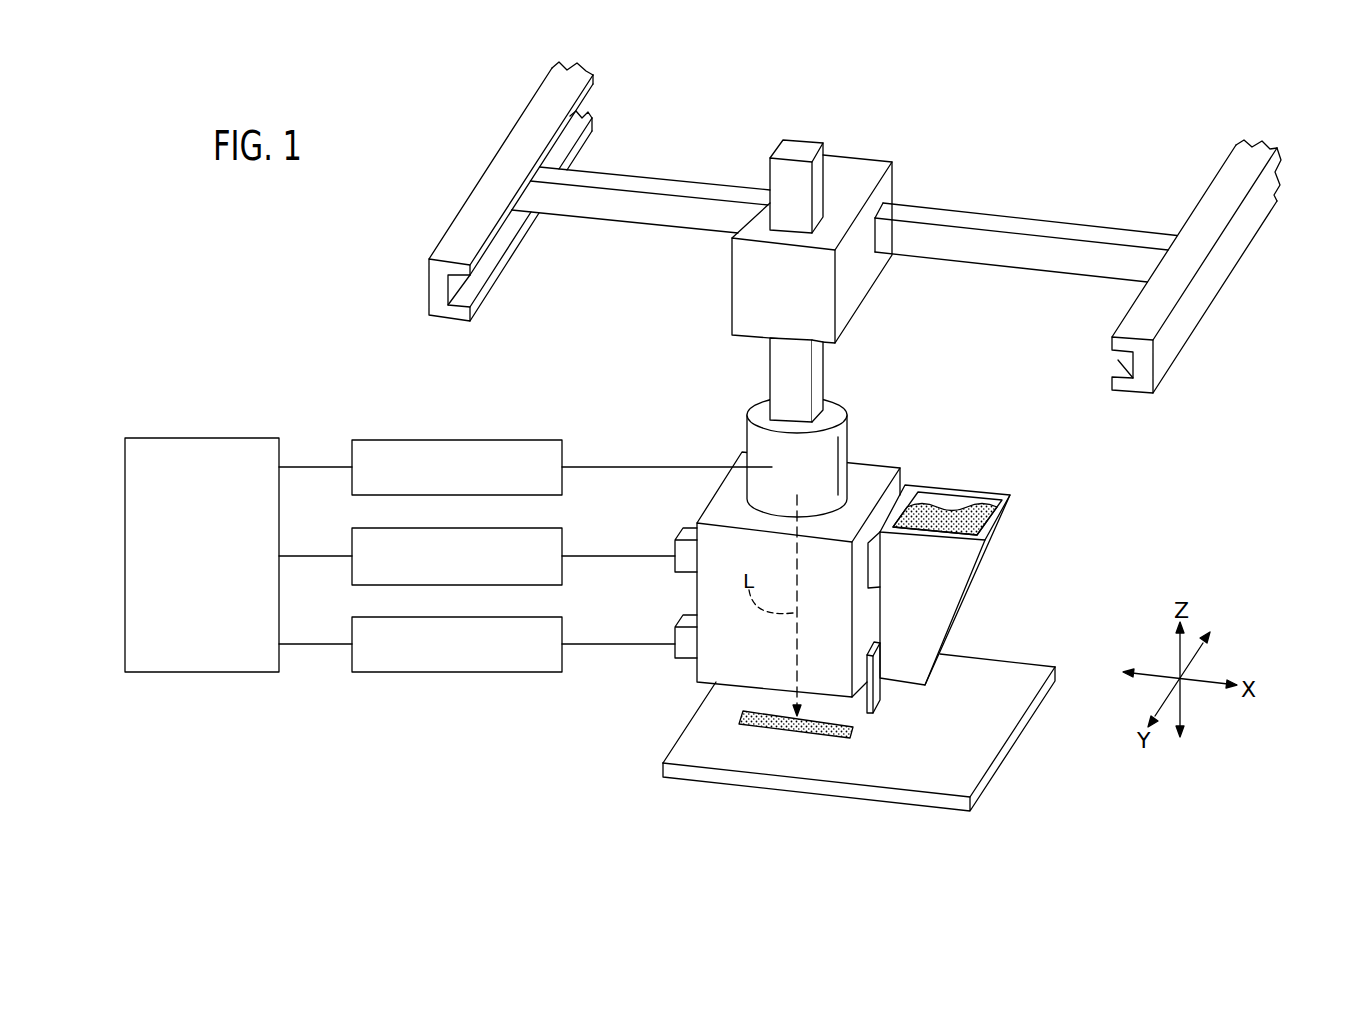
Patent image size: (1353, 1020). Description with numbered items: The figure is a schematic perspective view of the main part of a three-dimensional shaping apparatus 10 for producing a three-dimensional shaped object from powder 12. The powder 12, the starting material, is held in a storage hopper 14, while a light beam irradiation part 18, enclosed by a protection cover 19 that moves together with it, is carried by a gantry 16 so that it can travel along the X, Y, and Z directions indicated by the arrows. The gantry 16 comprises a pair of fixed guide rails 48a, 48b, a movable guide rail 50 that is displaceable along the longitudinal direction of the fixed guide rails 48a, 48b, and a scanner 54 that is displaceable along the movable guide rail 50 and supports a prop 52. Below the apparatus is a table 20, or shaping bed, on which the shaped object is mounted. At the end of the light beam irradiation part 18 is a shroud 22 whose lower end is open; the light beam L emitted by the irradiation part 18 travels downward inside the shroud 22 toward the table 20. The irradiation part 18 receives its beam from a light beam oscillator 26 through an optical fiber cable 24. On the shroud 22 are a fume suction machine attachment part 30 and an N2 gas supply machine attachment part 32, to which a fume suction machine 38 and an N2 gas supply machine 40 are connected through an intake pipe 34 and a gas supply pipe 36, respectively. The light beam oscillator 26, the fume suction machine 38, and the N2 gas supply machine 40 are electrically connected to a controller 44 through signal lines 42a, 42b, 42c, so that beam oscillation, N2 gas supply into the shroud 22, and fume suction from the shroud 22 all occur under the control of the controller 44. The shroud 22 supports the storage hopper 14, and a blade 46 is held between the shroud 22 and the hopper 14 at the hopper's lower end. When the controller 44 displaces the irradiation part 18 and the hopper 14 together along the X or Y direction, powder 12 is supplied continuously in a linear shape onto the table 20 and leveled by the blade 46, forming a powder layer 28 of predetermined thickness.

The three-dimensional shaping apparatus 10 is at (1136, 112).
The powder 12 is at (953, 497).
The storage hopper 14 is at (950, 572).
The gantry 16 is at (855, 242).
The light beam irradiation part 18 is at (776, 453).
The protection cover 19 is at (842, 447).
The table 20 is at (1015, 670).
The shroud 22 is at (718, 667).
The optical fiber cable 24 is at (598, 467).
The light beam oscillator 26 is at (397, 440).
The powder layer 28 is at (786, 730).
The fume suction machine attachment part 30 is at (687, 625).
The N2 gas supply machine attachment part 32 is at (687, 537).
The intake pipe 34 is at (598, 644).
The gas supply pipe 36 is at (598, 556).
The fume suction machine 38 is at (397, 617).
The N2 gas supply machine 40 is at (397, 528).
The signal line 42a is at (334, 467).
The signal line 42b is at (334, 644).
The signal line 42c is at (334, 556).
The controller 44 is at (184, 442).
The blade 46 is at (878, 692).
The fixed guide rail 48a is at (518, 146).
The fixed guide rail 48b is at (1178, 333).
The movable guide rail 50 is at (1005, 222).
The prop 52 is at (802, 148).
The scanner 54 is at (870, 162).